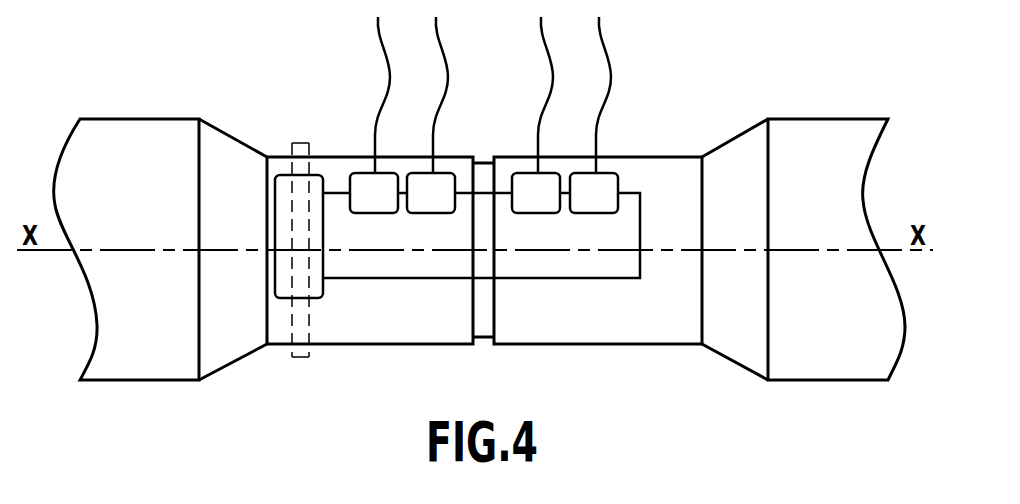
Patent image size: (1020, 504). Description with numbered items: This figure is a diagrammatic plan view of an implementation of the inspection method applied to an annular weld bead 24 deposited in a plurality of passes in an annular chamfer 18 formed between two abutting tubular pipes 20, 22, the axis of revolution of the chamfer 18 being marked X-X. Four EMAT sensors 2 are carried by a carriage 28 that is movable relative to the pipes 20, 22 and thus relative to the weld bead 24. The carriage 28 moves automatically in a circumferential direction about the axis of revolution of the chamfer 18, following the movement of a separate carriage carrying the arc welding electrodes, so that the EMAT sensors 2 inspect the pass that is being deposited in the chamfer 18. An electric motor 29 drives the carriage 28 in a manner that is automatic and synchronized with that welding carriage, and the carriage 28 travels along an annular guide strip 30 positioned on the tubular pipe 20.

The EMAT sensor 2 is at (602, 208).
The chamfer 18 is at (481, 157).
The tubular pipe 20 is at (407, 317).
The tubular pipe 22 is at (603, 322).
The annular weld bead 24 is at (481, 322).
The carriage 28 is at (561, 279).
The electric motor 29 is at (316, 185).
The annular guide strip 30 is at (300, 357).